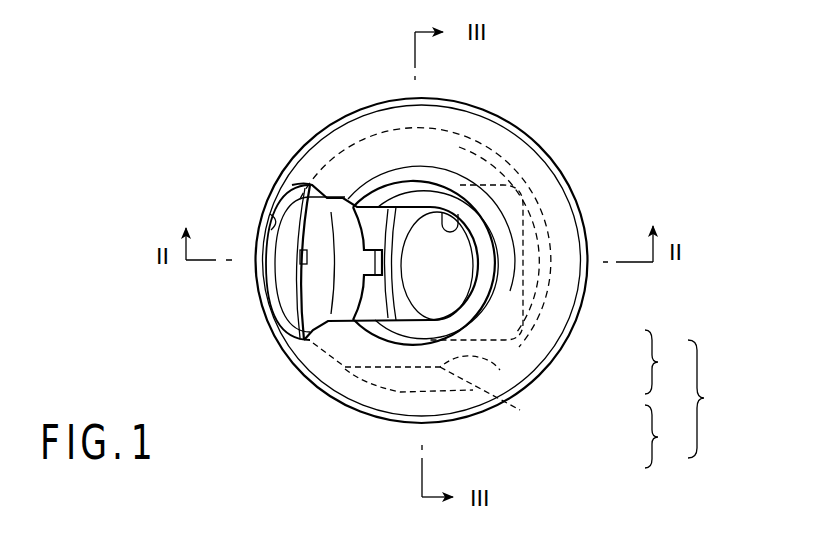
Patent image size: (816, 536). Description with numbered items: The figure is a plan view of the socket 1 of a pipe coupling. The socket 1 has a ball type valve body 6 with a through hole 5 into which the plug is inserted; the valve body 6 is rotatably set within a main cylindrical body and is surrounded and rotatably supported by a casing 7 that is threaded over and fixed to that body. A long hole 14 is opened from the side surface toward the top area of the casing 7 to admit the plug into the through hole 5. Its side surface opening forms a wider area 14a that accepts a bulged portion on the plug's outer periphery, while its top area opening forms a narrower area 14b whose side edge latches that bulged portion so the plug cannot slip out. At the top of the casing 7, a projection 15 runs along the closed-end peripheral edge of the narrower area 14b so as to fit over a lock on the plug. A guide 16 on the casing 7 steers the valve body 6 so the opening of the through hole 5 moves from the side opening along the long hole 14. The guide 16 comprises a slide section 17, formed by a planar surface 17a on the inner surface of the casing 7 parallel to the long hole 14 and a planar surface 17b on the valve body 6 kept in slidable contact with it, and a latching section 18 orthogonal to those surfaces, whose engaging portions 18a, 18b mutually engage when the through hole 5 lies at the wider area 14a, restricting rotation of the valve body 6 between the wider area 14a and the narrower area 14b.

The socket 1 is at (536, 118).
The through hole 5 is at (352, 246).
The valve body 6 is at (450, 180).
The casing 7 is at (553, 213).
The long hole 14 is at (398, 303).
The wider area 14a is at (279, 212).
The narrower area 14b is at (461, 234).
The projection 15 is at (470, 162).
The guide 16 is at (714, 399).
The slide section 17 is at (669, 436).
The planar surface 17a is at (500, 370).
The planar surface 17b is at (520, 410).
The latching section 18 is at (669, 362).
The engaging portion 18a is at (525, 280).
The engaging portion 18b is at (400, 258).